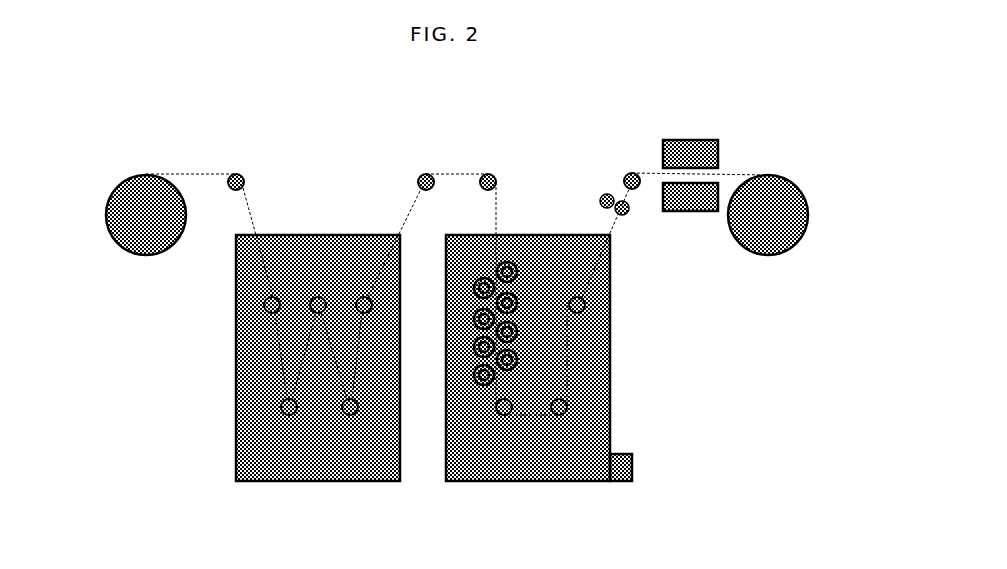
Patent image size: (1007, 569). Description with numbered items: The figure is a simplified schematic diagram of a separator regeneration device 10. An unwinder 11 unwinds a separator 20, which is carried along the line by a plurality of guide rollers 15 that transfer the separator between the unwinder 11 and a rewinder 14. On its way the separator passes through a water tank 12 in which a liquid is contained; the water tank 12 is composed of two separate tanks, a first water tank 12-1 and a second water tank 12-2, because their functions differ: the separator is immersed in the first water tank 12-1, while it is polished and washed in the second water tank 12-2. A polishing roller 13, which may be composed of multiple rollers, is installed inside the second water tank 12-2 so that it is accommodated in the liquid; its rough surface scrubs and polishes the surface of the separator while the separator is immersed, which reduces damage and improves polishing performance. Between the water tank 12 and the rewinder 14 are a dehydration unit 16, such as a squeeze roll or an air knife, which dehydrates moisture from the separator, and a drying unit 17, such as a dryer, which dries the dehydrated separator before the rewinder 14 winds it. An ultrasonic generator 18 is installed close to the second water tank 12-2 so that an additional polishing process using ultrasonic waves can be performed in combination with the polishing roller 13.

The separator regeneration device 10 is at (151, 99).
The unwinder 11 is at (141, 244).
The water tank 12 is at (423, 396).
The first water tank 12-1 is at (340, 492).
The second water tank 12-2 is at (555, 492).
The polishing roller 13 is at (525, 363).
The rewinder 14 is at (752, 256).
The guide rollers 15 is at (242, 172).
The dehydration unit 16 is at (603, 192).
The drying unit 17 is at (727, 152).
The ultrasonic generator 18 is at (632, 463).
The separator 20 is at (207, 173).